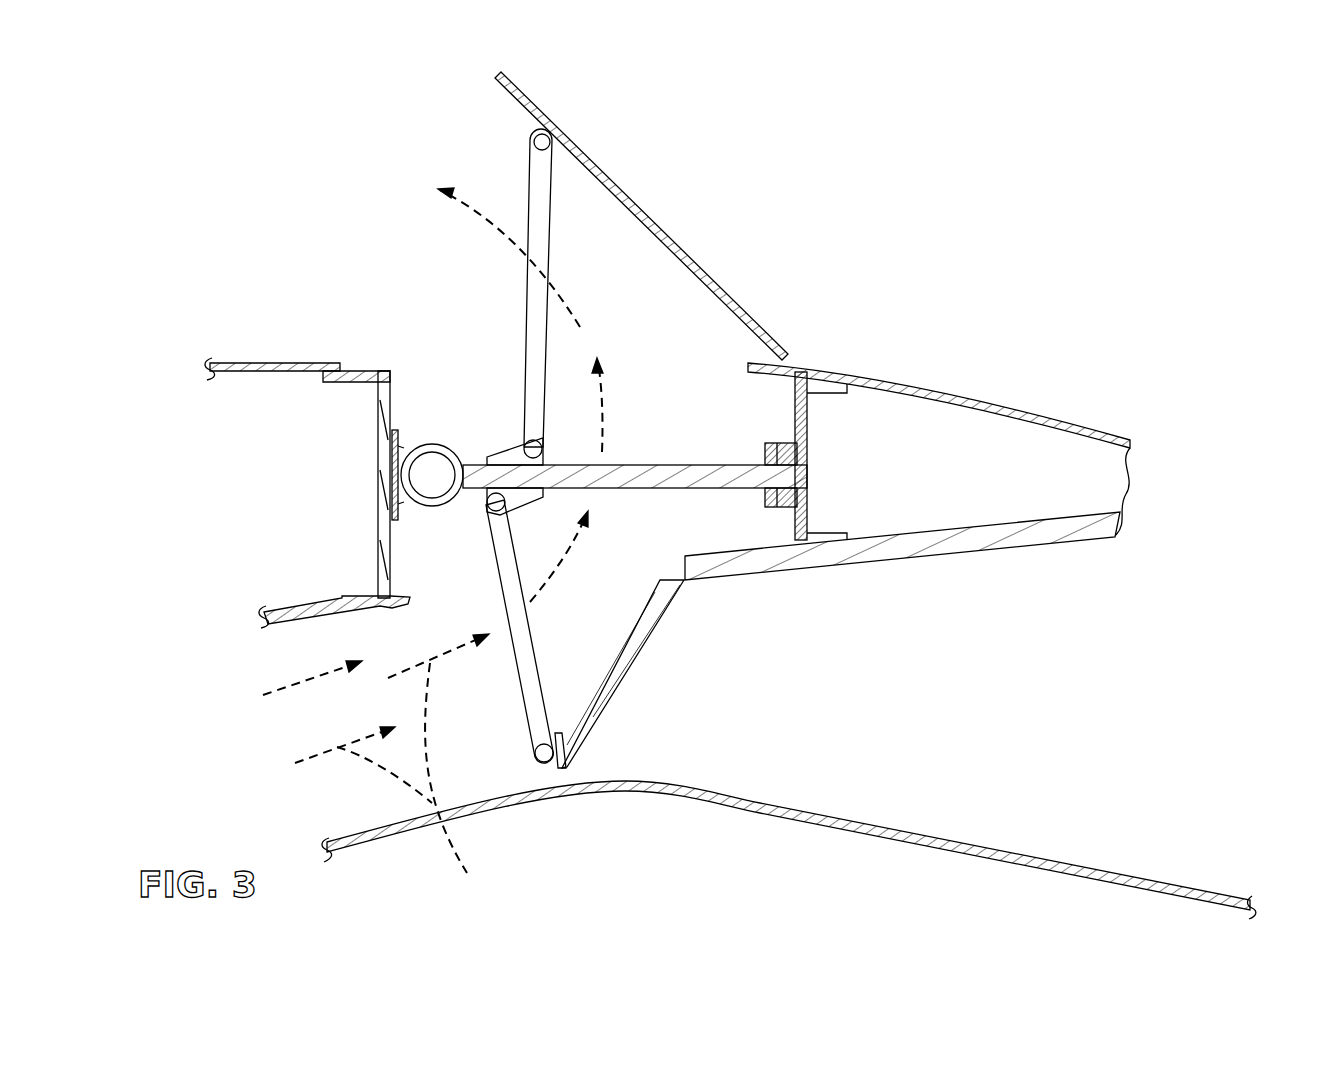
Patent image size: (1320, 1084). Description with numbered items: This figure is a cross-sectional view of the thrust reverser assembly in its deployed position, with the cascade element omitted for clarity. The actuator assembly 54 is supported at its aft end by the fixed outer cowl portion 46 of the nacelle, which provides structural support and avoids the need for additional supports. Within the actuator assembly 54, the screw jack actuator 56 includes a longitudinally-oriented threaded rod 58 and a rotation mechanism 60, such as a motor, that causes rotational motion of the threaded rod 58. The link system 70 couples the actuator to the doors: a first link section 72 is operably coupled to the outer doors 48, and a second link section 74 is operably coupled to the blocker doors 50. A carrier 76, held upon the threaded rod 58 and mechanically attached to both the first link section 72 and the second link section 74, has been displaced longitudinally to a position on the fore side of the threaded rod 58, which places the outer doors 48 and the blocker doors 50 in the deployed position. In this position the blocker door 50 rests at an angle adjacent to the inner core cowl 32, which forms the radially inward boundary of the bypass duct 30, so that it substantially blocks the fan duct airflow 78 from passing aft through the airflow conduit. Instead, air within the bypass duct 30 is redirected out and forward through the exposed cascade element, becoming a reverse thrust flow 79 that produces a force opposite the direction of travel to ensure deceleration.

The bypass duct 30 is at (410, 652).
The inner core cowl 32 is at (945, 835).
The fixed outer cowl portion 46 is at (1091, 428).
The outer doors 48 is at (670, 237).
The blocker doors 50 is at (630, 668).
The actuator assembly 54 is at (420, 423).
The screw jack actuator 56 is at (673, 433).
The threaded rod 58 is at (725, 464).
The rotation mechanism 60 is at (434, 462).
The link system 70 is at (553, 368).
The first link section 72 is at (556, 222).
The second link section 74 is at (523, 682).
The carrier 76 is at (514, 450).
The fan duct airflow 78 is at (421, 777).
The reverse thrust flow 79 is at (502, 227).